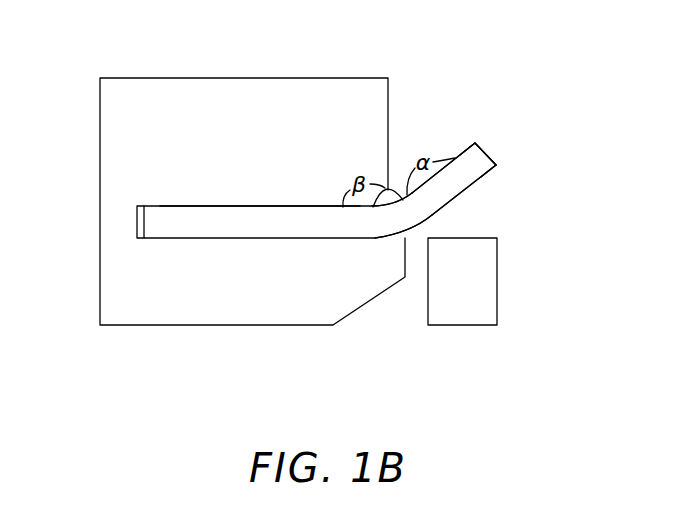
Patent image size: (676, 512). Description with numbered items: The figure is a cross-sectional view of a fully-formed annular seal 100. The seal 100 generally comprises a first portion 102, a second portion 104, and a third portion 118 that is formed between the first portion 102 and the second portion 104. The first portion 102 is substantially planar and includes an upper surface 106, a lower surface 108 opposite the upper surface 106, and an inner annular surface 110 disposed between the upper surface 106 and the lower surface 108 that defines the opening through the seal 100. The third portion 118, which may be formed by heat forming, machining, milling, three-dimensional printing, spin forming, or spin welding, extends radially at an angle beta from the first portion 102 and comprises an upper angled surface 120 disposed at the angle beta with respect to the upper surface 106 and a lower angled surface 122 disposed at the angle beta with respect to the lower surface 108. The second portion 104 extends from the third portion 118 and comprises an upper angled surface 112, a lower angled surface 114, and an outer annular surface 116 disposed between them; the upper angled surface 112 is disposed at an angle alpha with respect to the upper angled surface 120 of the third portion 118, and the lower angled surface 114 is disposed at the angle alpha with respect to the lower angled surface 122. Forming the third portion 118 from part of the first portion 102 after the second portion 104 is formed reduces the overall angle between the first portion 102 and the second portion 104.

The annular seal 100 is at (533, 52).
The first portion 102 is at (283, 206).
The second portion 104 is at (455, 158).
The upper surface 106 is at (199, 205).
The lower surface 108 is at (193, 240).
The inner annular surface 110 is at (140, 222).
The upper angled surface 112 is at (468, 147).
The lower angled surface 114 is at (475, 182).
The outer annular surface 116 is at (489, 155).
The third portion 118 is at (434, 214).
The upper angled surface 120 is at (397, 198).
The lower angled surface 122 is at (419, 225).